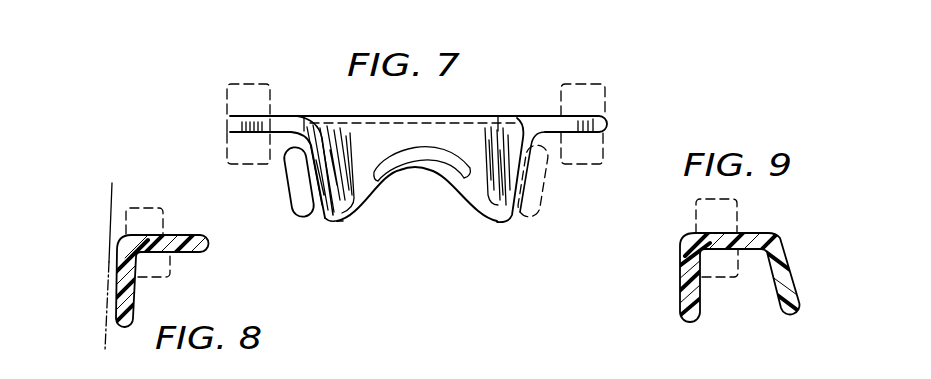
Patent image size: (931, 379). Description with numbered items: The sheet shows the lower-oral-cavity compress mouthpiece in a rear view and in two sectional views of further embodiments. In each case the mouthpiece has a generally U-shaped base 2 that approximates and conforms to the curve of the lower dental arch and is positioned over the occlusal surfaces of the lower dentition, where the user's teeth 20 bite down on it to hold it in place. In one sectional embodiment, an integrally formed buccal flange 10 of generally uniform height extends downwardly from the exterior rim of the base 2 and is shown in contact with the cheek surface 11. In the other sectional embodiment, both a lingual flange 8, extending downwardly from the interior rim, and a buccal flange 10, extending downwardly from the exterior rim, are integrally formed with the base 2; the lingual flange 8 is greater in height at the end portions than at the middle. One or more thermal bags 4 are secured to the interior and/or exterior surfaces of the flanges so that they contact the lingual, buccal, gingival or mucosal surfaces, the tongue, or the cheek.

In FIG. 7, the U-shaped base 2 is at (287, 117).
In FIG. 8, the U-shaped base 2 is at (182, 234).
In FIG. 9, the U-shaped base 2 is at (754, 233).
In FIG. 7, the thermal bag 4 is at (418, 156).
In FIG. 9, the lingual flange 8 is at (787, 243).
In FIG. 8, the buccal flange 10 is at (123, 293).
In FIG. 9, the buccal flange 10 is at (691, 273).
In FIG. 8, the cheek surface 11 is at (100, 266).
In FIG. 7, the teeth 20 is at (248, 90).
In FIG. 8, the teeth 20 is at (143, 207).
In FIG. 9, the teeth 20 is at (694, 202).